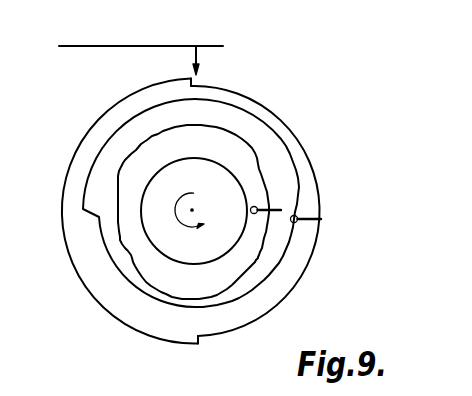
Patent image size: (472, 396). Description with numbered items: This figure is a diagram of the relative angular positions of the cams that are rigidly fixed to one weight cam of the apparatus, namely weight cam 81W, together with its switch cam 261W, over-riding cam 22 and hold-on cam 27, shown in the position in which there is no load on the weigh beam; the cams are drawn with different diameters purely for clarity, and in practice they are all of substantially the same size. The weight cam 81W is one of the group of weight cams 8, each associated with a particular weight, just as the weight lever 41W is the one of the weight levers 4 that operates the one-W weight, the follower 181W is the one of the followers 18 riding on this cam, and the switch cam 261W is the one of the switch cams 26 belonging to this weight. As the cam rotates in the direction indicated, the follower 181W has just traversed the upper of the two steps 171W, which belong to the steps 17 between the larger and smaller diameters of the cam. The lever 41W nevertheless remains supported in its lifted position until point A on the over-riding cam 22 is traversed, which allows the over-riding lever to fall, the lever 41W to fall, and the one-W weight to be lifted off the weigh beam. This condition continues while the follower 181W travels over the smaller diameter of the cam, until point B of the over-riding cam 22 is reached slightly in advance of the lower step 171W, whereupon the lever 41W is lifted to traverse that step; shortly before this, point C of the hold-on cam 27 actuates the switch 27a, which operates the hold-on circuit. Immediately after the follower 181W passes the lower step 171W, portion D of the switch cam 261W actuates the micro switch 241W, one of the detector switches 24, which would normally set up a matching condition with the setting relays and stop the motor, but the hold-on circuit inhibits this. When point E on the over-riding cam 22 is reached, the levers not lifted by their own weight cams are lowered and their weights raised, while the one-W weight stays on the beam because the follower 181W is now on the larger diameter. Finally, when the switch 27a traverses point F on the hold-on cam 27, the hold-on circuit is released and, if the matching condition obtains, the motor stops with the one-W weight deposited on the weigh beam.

The weight lever 4 is at (141, 32).
The weight lever for 1W weight 41W is at (131, 45).
The follower 18 is at (236, 63).
The follower for 1W weight cam 181W is at (199, 70).
The weight cam 8 is at (188, 211).
The weight cam for 1W weight 81W is at (125, 108).
The step 17 is at (189, 213).
The upper and lower steps of 1W weight cam 171W is at (190, 78).
The switch cam 26 is at (232, 203).
The switch cam for 1W weight 261W is at (274, 165).
The hold-on cam 27 is at (222, 232).
The hold-on switch 27a is at (256, 206).
The detector switch 24 is at (337, 244).
The micro switch for 1W weight 241W is at (314, 220).
The over-riding cam 22 is at (132, 240).
The point A of over-riding cam A is at (254, 151).
The point B of over-riding cam B is at (255, 261).
The point C of hold-on cam C is at (158, 245).
The portion D of switch cam D is at (83, 209).
The point E of over-riding cam E is at (133, 266).
The point F of hold-on cam F is at (130, 152).